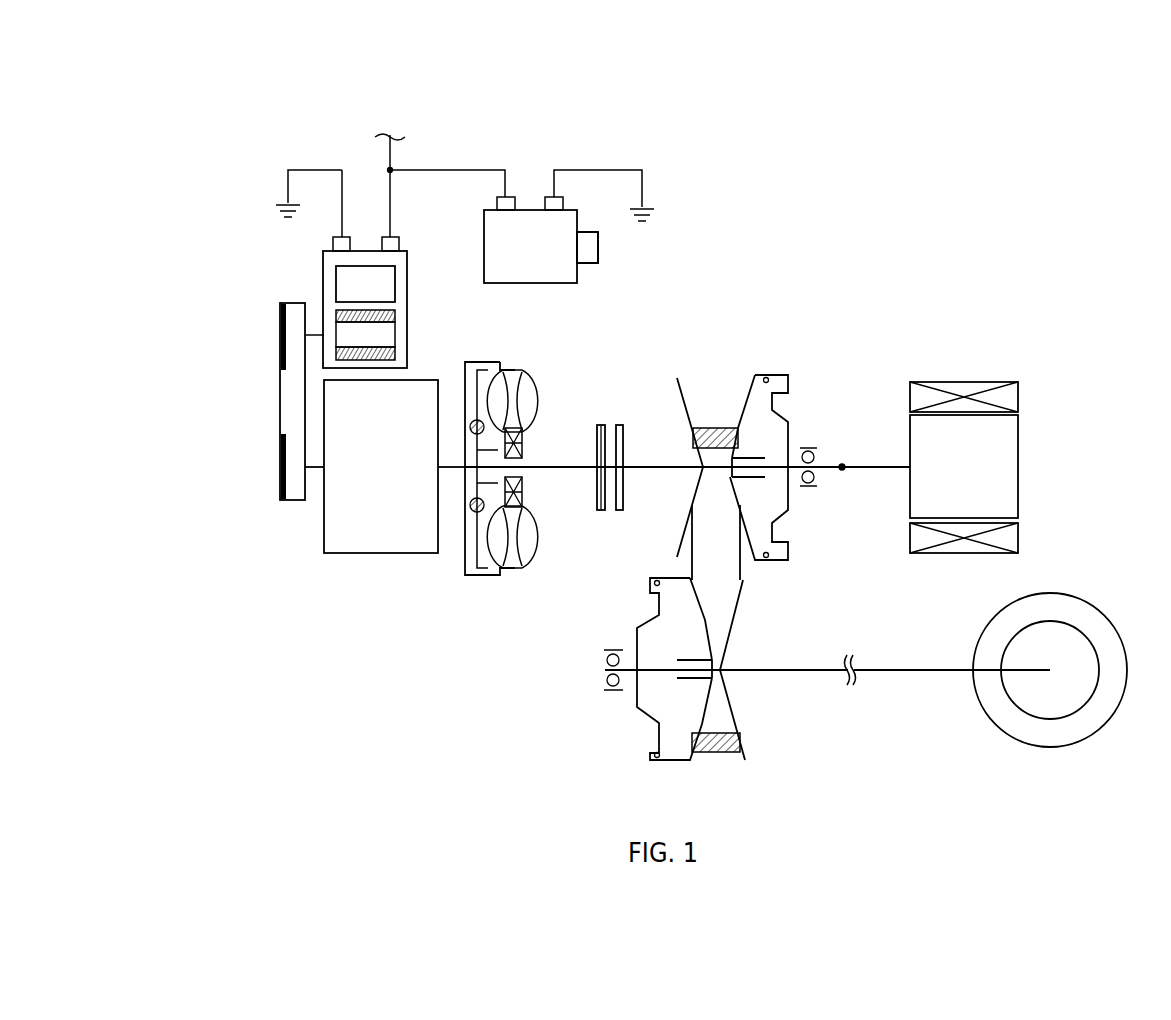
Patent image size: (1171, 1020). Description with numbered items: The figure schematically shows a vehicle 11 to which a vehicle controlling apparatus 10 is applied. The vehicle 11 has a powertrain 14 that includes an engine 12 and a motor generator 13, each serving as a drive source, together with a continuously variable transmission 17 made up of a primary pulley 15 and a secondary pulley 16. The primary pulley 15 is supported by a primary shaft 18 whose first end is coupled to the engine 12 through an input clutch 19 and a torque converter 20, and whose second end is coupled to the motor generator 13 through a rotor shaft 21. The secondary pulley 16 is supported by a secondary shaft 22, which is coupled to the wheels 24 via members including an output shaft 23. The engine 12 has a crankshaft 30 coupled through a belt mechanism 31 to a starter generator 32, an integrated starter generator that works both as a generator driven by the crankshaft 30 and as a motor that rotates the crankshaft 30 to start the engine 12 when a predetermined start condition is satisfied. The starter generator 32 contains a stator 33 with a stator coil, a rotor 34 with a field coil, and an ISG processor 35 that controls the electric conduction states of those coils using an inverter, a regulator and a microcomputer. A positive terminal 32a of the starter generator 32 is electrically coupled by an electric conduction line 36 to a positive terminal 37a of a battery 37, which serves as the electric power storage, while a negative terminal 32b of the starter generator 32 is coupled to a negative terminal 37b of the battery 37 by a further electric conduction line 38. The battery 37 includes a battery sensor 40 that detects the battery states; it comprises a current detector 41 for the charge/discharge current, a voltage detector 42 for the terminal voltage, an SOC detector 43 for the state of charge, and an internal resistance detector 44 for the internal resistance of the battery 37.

The vehicle controlling apparatus 10 is at (232, 122).
The vehicle 11 is at (1035, 152).
The engine 12 is at (357, 556).
The motor generator 13 is at (1012, 472).
The powertrain 14 is at (1095, 354).
The primary pulley 15 is at (773, 412).
The secondary pulley 16 is at (655, 730).
The continuously variable transmission 17 is at (606, 624).
The primary shaft 18 is at (667, 470).
The input clutch 19 is at (610, 425).
The torque converter 20 is at (528, 380).
The rotor shaft 21 is at (870, 467).
The secondary shaft 22 is at (762, 668).
The output shaft 23 is at (903, 668).
The wheels 24 is at (1067, 604).
The crankshaft 30 is at (312, 470).
The belt mechanism 31 is at (288, 407).
The starter generator 32 is at (351, 251).
The positive terminal 32a is at (400, 246).
The negative terminal 32b is at (333, 245).
The stator 33 is at (398, 316).
The rotor 34 is at (398, 341).
The ISG processor 35 is at (398, 286).
The electric conduction line 36 is at (462, 170).
The battery 37 is at (516, 207).
The positive terminal 37a is at (510, 195).
The negative terminal 37b is at (565, 201).
The electric conduction line 38 is at (288, 190).
The battery sensor 40 is at (612, 238).
The current detector 41 is at (600, 257).
The voltage detector 42 is at (670, 258).
The SOC detector 43 is at (670, 258).
The internal resistance detector 44 is at (670, 258).